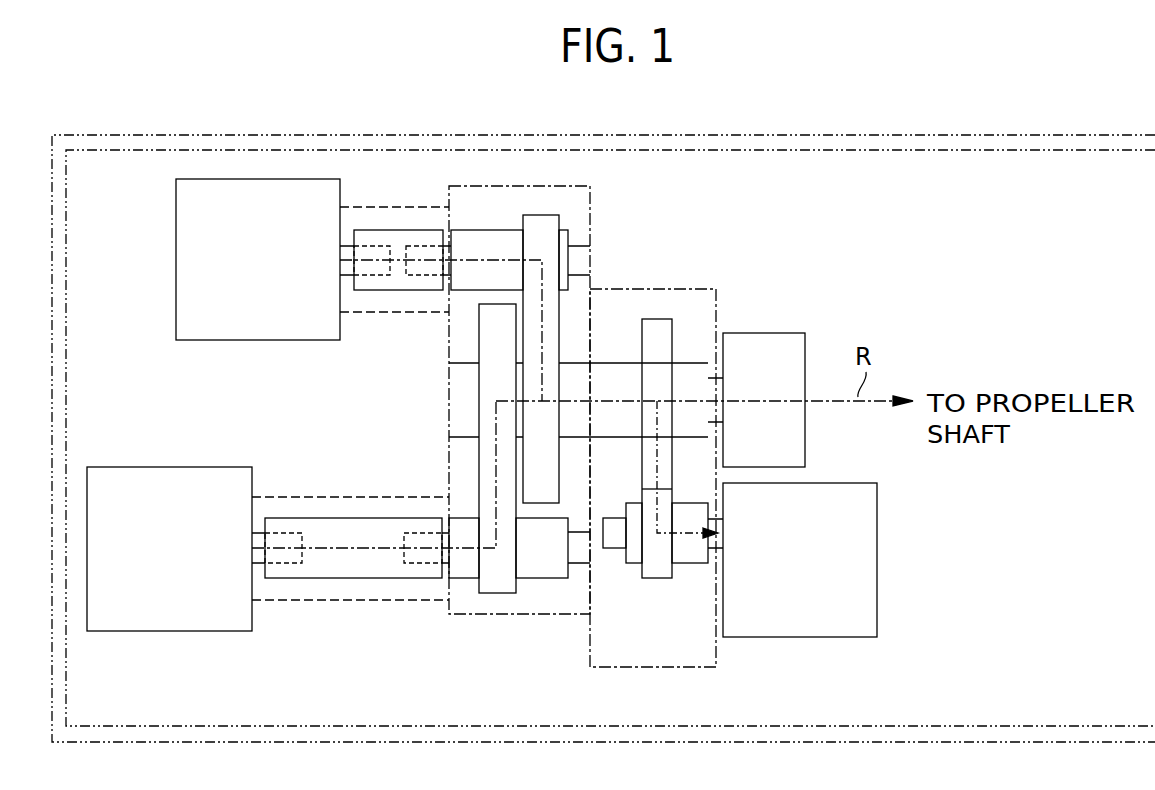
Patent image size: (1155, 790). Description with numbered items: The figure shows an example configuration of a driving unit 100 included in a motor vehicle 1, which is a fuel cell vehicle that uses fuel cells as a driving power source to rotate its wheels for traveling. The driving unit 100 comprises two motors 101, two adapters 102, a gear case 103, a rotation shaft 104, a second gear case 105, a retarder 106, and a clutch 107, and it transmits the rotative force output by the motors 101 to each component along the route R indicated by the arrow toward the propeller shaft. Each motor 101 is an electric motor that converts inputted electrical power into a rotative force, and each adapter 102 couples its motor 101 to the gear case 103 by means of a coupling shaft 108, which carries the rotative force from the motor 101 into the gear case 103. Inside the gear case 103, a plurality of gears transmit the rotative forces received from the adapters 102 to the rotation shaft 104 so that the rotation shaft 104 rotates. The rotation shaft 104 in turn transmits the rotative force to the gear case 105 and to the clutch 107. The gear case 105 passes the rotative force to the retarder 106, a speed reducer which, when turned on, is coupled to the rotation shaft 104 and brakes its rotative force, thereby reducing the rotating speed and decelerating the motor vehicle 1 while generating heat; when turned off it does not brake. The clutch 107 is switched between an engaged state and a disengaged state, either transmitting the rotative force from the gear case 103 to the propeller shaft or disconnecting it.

The motor vehicle 1 is at (1125, 135).
The driving unit 100 is at (1052, 150).
The motor 101 is at (291, 340).
The adapter 102 is at (363, 312).
The gear case 103 is at (498, 614).
The rotation shaft 104 is at (612, 363).
The gear case 105 is at (622, 667).
The retarder 106 is at (778, 637).
The clutch 107 is at (772, 333).
The coupling shaft 108 is at (423, 290).